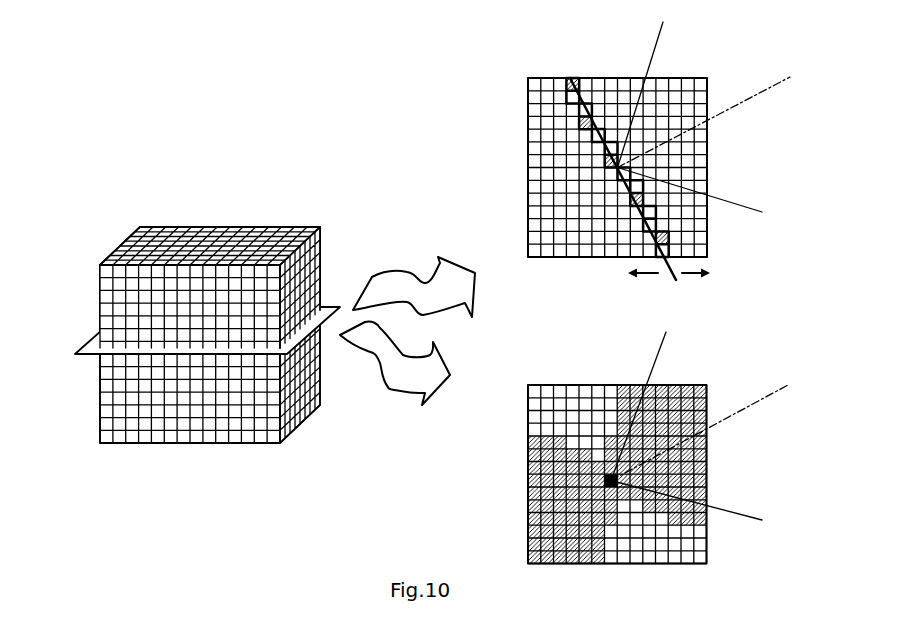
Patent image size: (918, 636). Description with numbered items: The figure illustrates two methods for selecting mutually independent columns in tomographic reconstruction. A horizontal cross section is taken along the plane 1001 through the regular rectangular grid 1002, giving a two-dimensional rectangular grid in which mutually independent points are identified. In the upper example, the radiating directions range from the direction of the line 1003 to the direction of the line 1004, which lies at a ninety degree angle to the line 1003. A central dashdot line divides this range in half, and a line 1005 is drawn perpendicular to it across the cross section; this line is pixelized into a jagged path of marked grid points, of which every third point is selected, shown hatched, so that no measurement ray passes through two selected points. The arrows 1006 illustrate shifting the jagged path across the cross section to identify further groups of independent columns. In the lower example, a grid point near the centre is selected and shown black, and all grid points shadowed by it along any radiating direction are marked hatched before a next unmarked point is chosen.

The plane 1001 is at (278, 445).
The regular rectangular grid 1002 is at (89, 356).
The line 1003 is at (651, 50).
The line 1004 is at (762, 212).
The line 1005 is at (570, 78).
The arrows 1006 is at (647, 280).